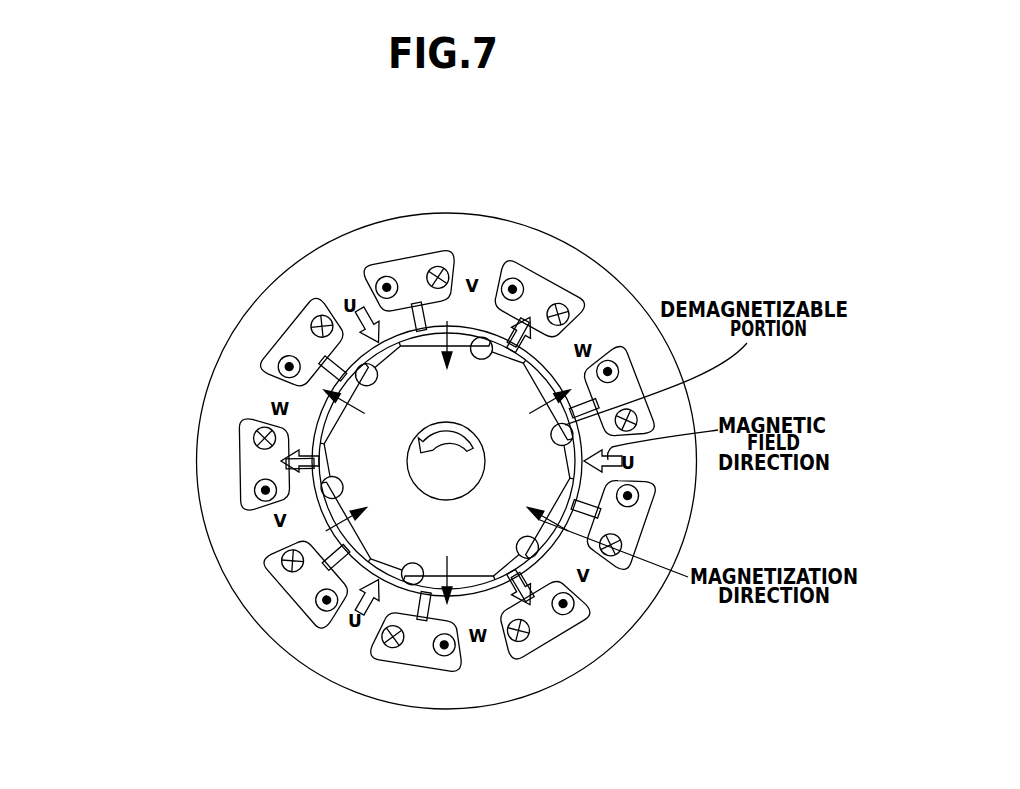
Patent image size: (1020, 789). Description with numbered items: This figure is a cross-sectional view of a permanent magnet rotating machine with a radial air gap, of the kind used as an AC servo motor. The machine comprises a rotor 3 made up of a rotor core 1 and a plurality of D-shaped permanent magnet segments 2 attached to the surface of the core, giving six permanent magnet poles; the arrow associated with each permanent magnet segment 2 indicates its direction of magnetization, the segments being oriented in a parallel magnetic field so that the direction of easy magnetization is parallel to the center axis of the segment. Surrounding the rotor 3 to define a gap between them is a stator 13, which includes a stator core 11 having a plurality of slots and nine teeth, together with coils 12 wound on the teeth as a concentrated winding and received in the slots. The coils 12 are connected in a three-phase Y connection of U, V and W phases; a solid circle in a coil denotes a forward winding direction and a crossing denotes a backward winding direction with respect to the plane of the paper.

The rotor core 1 is at (322, 432).
The permanent magnet segment 2 is at (345, 402).
The rotor 3 is at (118, 286).
The stator core 11 is at (333, 260).
The coil 12 is at (287, 365).
The stator 13 is at (184, 100).